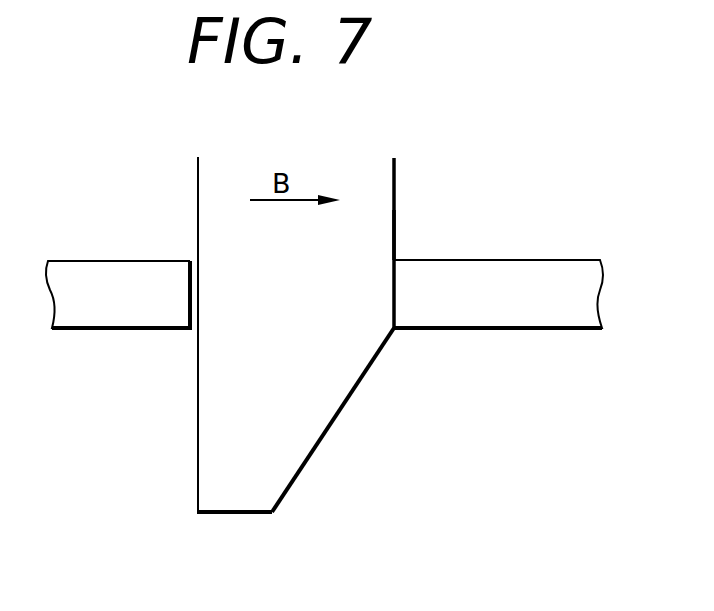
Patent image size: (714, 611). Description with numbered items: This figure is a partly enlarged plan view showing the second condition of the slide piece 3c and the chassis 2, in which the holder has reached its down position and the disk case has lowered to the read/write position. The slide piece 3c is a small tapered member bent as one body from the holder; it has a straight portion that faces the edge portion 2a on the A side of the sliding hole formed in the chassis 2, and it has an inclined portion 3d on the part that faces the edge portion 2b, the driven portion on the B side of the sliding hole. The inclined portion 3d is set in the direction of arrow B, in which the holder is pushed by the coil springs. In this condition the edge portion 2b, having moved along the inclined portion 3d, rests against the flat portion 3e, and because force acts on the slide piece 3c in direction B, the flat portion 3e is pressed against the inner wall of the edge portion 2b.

The chassis 2 is at (565, 267).
The edge portion 2a is at (190, 281).
The edge portion 2b is at (394, 292).
The slide piece 3c is at (388, 184).
The inclined portion 3d is at (298, 464).
The flat portion 3e is at (394, 233).